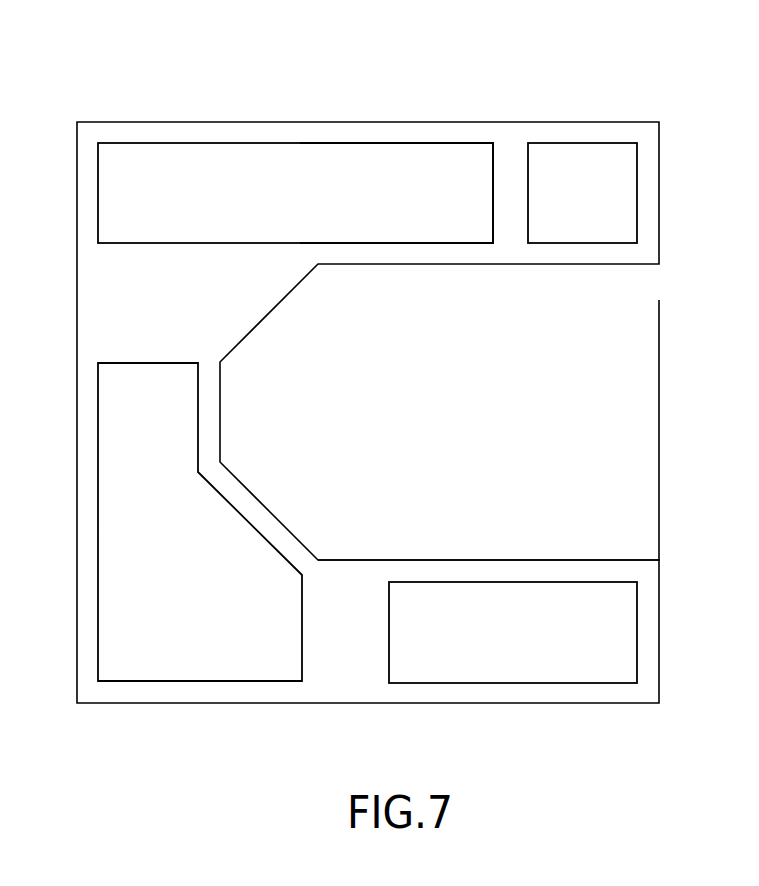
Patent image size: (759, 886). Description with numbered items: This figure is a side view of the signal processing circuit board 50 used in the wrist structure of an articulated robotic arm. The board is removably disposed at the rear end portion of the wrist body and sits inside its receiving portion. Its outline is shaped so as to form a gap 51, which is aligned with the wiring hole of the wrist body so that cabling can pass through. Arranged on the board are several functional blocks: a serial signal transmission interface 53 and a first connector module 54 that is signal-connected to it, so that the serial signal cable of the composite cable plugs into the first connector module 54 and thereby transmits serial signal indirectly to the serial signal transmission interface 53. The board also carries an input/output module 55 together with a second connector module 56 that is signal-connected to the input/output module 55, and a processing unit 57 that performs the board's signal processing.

The signal processing circuit board 50 is at (375, 124).
The gap 51 is at (622, 504).
The serial signal transmission interface 53 is at (612, 167).
The first connector module 54 is at (451, 170).
The input/output module 55 is at (152, 665).
The second connector module 56 is at (236, 162).
The processing unit 57 is at (597, 663).